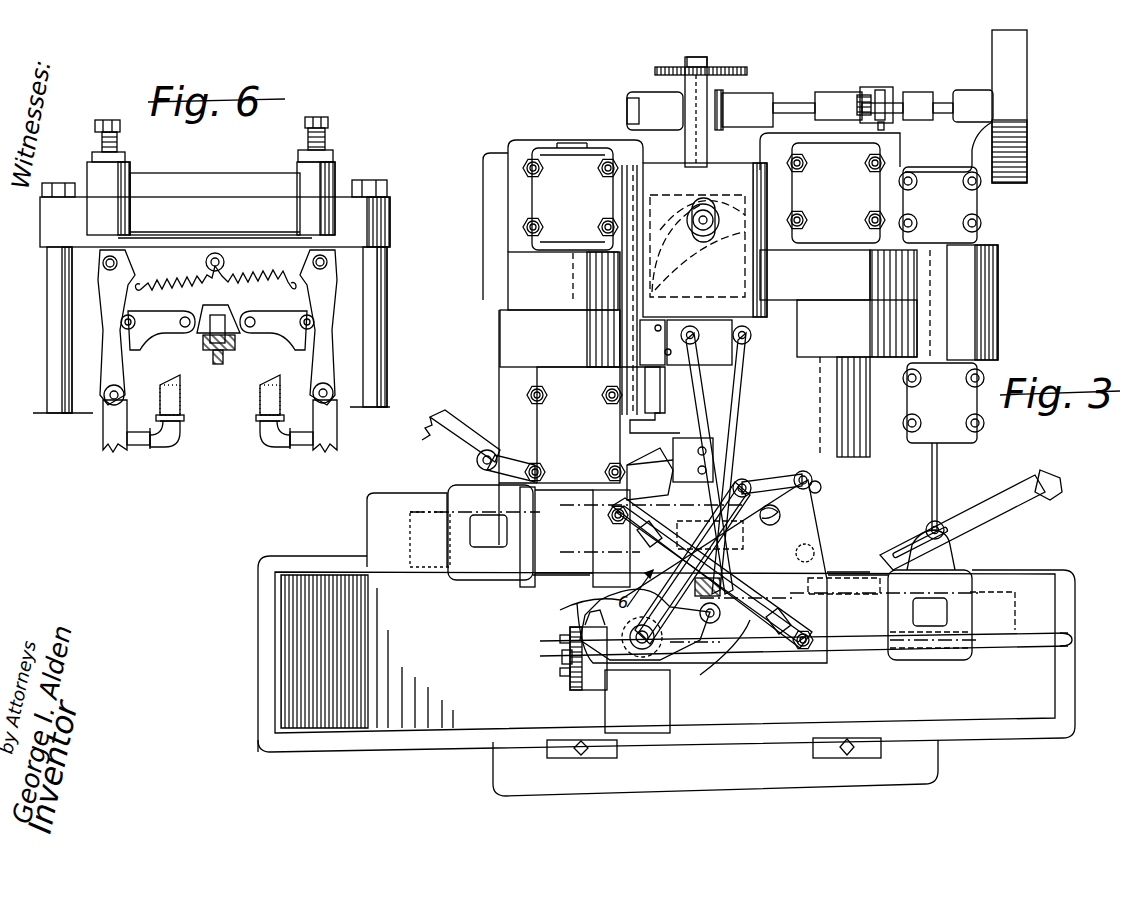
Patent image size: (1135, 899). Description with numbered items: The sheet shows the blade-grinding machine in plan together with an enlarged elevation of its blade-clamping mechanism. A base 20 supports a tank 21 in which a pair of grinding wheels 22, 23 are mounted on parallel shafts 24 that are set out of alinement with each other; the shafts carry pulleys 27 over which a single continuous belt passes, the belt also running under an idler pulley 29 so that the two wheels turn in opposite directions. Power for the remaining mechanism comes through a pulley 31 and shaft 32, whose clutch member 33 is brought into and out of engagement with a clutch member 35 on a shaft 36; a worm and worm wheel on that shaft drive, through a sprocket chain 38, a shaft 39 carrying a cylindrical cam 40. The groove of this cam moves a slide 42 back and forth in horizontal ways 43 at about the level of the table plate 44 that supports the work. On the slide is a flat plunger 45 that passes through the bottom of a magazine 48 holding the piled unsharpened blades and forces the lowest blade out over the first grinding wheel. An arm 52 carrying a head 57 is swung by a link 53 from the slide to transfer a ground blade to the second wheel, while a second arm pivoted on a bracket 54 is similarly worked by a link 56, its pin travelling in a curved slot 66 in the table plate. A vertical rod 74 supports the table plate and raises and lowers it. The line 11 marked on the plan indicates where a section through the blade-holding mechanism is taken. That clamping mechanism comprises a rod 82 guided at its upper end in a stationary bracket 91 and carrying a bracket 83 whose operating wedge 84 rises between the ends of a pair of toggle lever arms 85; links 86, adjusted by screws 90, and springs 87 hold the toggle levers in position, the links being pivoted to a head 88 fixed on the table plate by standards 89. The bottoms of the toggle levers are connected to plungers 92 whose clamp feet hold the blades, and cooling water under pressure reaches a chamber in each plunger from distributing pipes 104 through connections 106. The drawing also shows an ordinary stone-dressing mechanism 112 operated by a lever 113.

In FIG. 3, the section line 11 is at (868, 614).
In FIG. 3, the base 20 is at (508, 775).
In FIG. 3, the tank 21 is at (268, 677).
In FIG. 3, the grinding wheel 22 is at (410, 527).
In FIG. 3, the grinding wheel 23 is at (1015, 618).
In FIG. 3, the parallel shafts 24 is at (572, 147).
In FIG. 3, the pulleys 27 is at (513, 292).
In FIG. 3, the idler pulley 29 is at (1000, 315).
In FIG. 3, the pulley 31 is at (1085, 82).
In FIG. 3, the shaft 32 is at (940, 103).
In FIG. 3, the clutch member 33 is at (882, 100).
In FIG. 3, the clutch member 35 is at (853, 78).
In FIG. 3, the shaft 36 is at (787, 103).
In FIG. 3, the sprocket chain 38 is at (712, 68).
In FIG. 3, the shaft 39 is at (690, 80).
In FIG. 3, the cylindrical cam 40 is at (675, 198).
In FIG. 3, the slide 42 is at (745, 285).
In FIG. 3, the horizontal ways 43 is at (780, 328).
In FIG. 3, the table plate 44 is at (788, 663).
In FIG. 3, the plunger 45 is at (655, 393).
In FIG. 3, the magazine 48 is at (660, 450).
In FIG. 3, the arm 52 is at (803, 490).
In FIG. 3, the link 53 is at (676, 376).
In FIG. 3, the bracket 54 is at (598, 615).
In FIG. 3, the link 56 is at (745, 470).
In FIG. 3, the head 57 is at (680, 512).
In FIG. 3, the curved slot 66 is at (747, 655).
In FIG. 3, the vertical rod 74 is at (787, 533).
In FIG. 3, the rod 82 is at (641, 645).
In FIG. 6, the bracket 83 is at (218, 364).
In FIG. 3, the bracket 83 is at (668, 655).
In FIG. 6, the operating wedge 84 is at (215, 309).
In FIG. 6, the toggle lever arms 85 is at (172, 328).
In FIG. 6, the links 86 is at (115, 306).
In FIG. 6, the springs 87 is at (175, 266).
In FIG. 6, the head 88 is at (215, 205).
In FIG. 3, the head 88 is at (733, 596).
In FIG. 6, the standards 89 is at (56, 365).
In FIG. 6, the screws 90 is at (100, 143).
In FIG. 3, the stationary bracket 91 is at (562, 668).
In FIG. 6, the plungers 92 is at (103, 440).
In FIG. 6, the distributing pipes 104 is at (258, 405).
In FIG. 6, the connections 106 is at (140, 440).
In FIG. 3, the mechanism 112 is at (488, 575).
In FIG. 3, the lever 113 is at (450, 435).